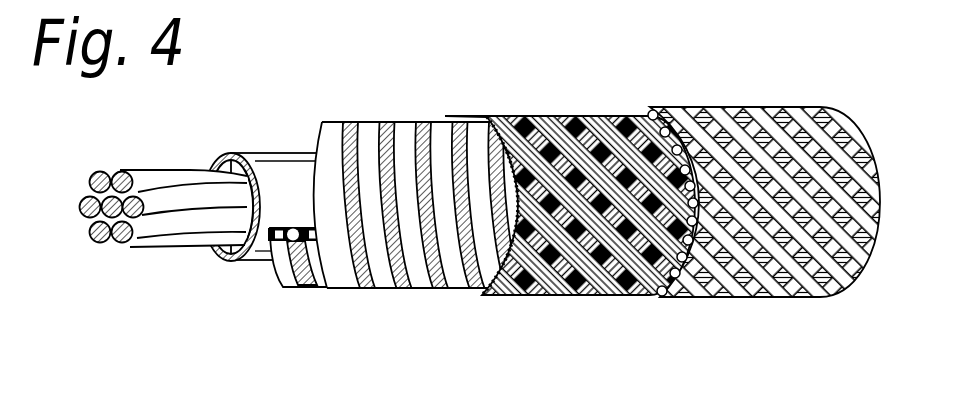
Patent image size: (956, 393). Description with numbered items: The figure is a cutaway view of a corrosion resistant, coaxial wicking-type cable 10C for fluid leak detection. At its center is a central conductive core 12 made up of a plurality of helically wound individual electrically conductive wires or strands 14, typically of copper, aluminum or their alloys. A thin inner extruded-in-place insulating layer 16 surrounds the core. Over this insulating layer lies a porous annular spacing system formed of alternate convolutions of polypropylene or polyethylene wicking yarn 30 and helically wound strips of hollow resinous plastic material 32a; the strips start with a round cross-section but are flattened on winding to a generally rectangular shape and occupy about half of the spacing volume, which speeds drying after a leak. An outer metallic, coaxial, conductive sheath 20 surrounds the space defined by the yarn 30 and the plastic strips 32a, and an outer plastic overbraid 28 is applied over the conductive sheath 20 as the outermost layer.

The cable 10C is at (480, 197).
The central conductive core 12 is at (152, 259).
The electrically conductive wires or strands 14 is at (173, 197).
The inner extruded-in-place insulating layer 16 is at (267, 153).
The outer metallic coaxial conductive sheath 20 is at (563, 98).
The outer plastic overbraid 28 is at (729, 107).
The wicking yarn 30 is at (372, 283).
The helically wound strips of hollow resinous plastic material 32a is at (323, 279).